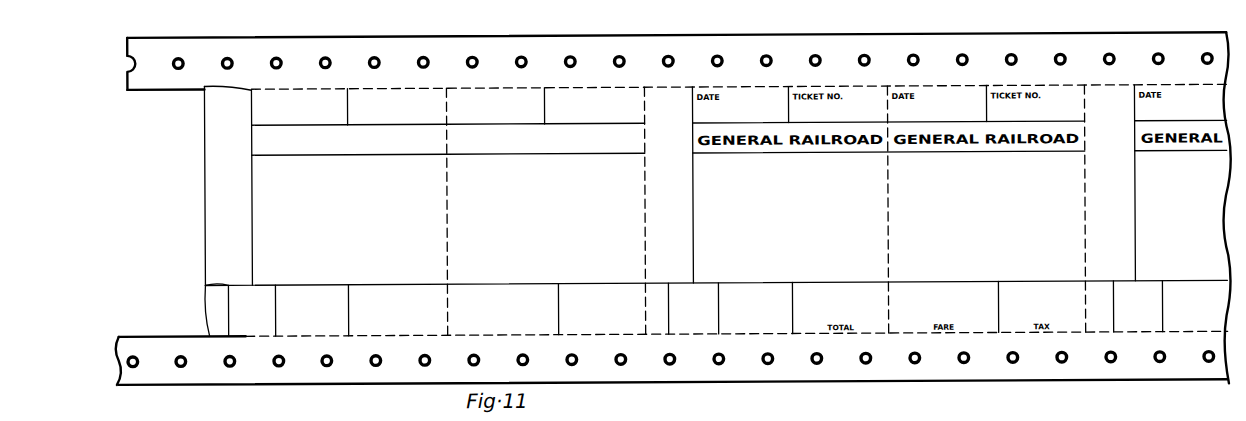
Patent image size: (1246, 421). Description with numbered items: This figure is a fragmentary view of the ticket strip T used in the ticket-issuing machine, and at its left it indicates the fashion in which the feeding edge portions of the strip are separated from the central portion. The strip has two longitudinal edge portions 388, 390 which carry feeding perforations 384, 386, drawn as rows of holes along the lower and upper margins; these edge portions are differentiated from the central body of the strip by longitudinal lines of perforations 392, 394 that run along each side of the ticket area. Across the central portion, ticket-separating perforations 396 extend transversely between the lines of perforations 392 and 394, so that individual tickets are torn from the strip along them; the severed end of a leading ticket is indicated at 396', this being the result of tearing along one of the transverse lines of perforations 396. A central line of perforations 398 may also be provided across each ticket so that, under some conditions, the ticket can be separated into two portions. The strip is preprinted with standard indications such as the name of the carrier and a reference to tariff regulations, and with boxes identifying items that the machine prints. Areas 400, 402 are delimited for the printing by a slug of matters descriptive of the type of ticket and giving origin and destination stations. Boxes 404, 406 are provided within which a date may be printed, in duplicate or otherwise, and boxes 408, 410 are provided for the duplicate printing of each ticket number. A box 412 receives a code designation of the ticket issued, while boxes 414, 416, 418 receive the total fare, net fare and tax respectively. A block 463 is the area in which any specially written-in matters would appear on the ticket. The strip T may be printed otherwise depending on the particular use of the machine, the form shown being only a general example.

The ticket strip T is at (662, 386).
The feeding perforation 384 is at (282, 368).
The feeding perforation 386 is at (282, 55).
The longitudinal edge portion 388 is at (260, 372).
The longitudinal edge portion 390 is at (431, 46).
The line of perforations 392 is at (305, 334).
The line of perforations 394 is at (339, 88).
The ticket-separating perforations 396 is at (864, 184).
The severed end of leading ticket 396' is at (198, 186).
The central line of perforations 398 is at (448, 222).
The area 400 is at (329, 232).
The area 402 is at (539, 223).
The box 404 is at (323, 105).
The box 406 is at (515, 107).
The box 408 is at (424, 95).
The box 410 is at (621, 97).
The box 412 is at (307, 296).
The box 414 is at (377, 297).
The box 416 is at (476, 296).
The box 418 is at (576, 296).
The block 463 is at (212, 306).